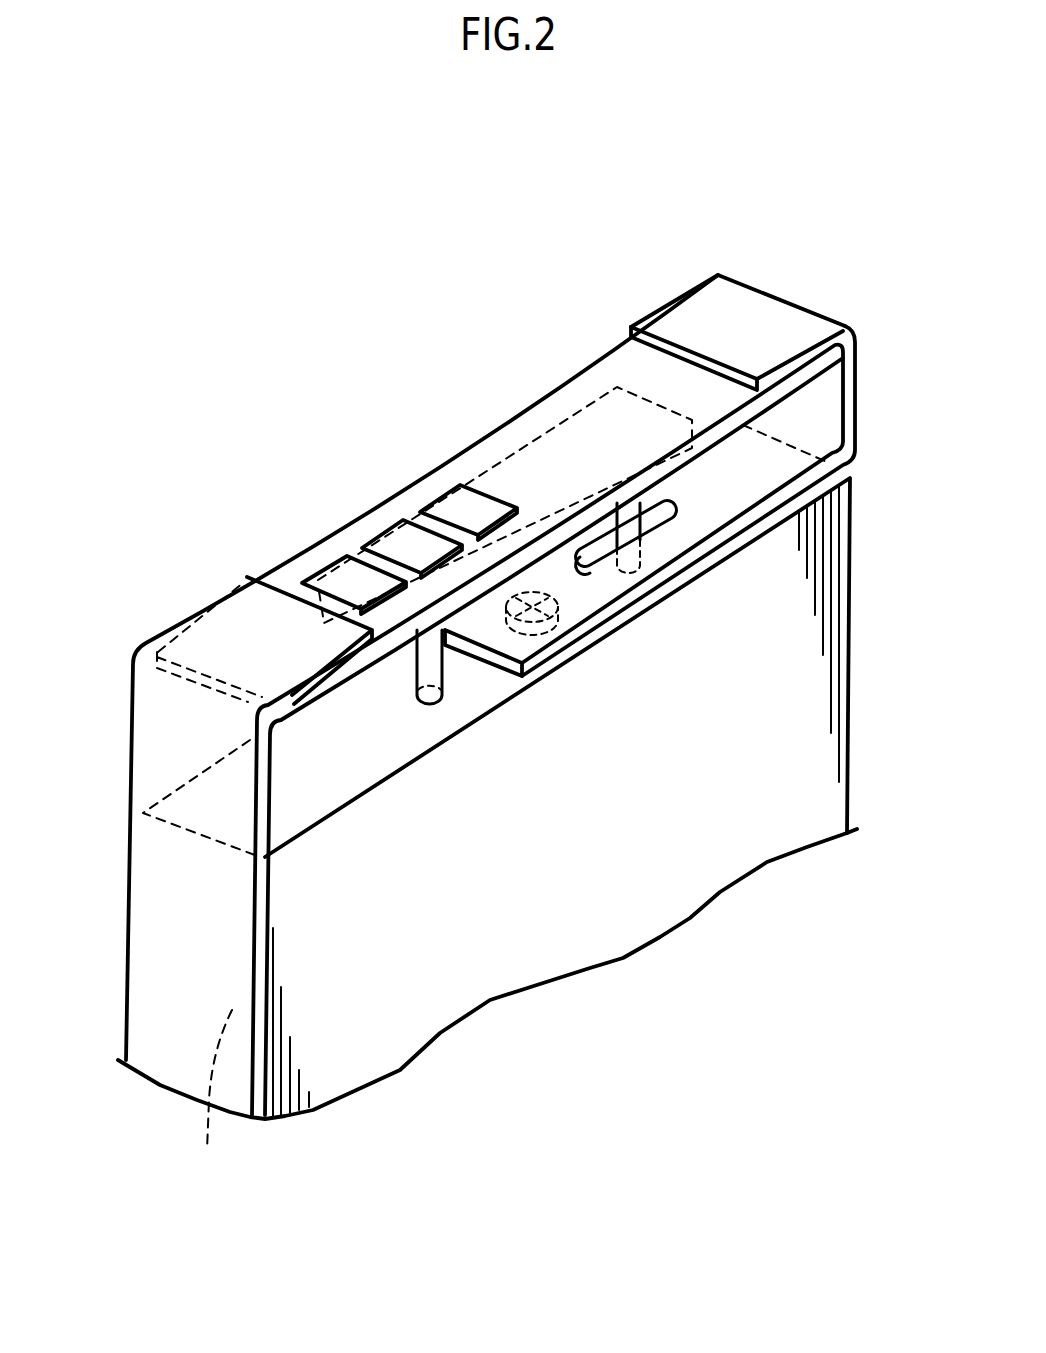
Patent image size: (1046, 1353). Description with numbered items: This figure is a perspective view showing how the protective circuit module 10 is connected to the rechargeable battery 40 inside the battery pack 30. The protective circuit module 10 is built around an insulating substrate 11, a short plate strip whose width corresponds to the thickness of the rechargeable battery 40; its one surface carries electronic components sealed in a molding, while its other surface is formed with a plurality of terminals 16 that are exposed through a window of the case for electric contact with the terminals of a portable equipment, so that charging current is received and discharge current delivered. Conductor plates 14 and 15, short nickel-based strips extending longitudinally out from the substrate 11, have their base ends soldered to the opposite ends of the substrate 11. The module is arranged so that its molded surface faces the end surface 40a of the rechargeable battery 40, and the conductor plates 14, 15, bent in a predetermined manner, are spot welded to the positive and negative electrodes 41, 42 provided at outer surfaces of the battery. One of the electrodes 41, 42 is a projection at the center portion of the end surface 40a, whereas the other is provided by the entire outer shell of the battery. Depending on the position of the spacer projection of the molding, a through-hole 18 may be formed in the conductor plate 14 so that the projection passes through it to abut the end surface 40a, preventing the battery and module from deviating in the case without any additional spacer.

The protective circuit module 10 is at (472, 499).
The insulating substrate 11 is at (492, 447).
The conductor plate 14 is at (813, 321).
The conductor plate 15 is at (160, 741).
The terminals 16 is at (453, 507).
The slot 18 is at (660, 523).
The battery pack 30 is at (856, 550).
The rechargeable battery 40 is at (528, 808).
The end surface 40a is at (435, 722).
The positive electrode 41 is at (577, 643).
The negative electrode 42 is at (208, 1101).